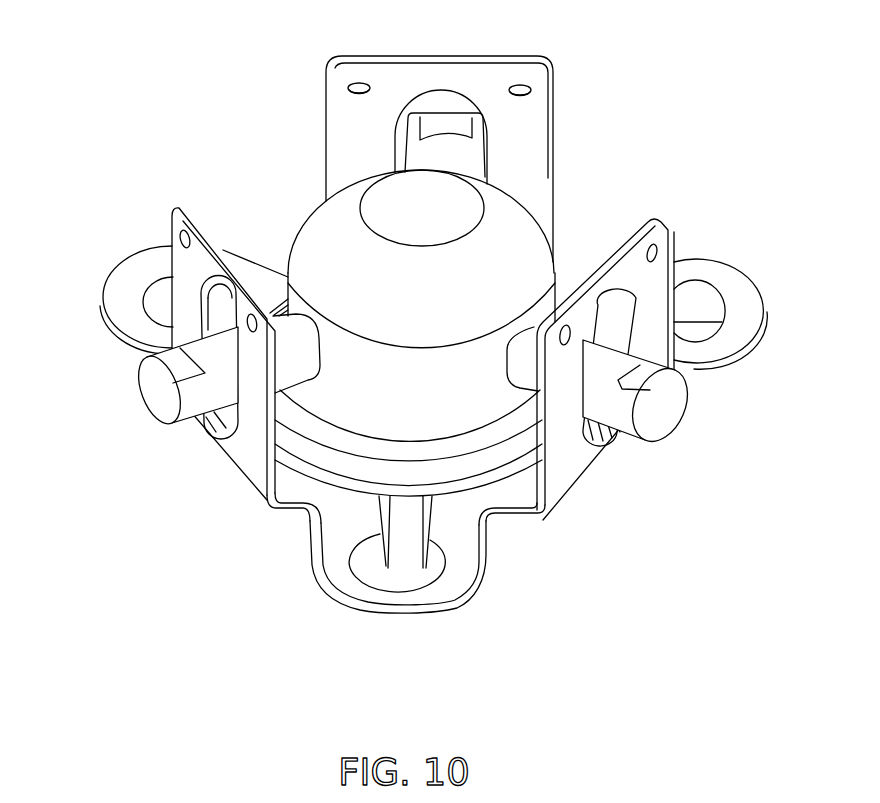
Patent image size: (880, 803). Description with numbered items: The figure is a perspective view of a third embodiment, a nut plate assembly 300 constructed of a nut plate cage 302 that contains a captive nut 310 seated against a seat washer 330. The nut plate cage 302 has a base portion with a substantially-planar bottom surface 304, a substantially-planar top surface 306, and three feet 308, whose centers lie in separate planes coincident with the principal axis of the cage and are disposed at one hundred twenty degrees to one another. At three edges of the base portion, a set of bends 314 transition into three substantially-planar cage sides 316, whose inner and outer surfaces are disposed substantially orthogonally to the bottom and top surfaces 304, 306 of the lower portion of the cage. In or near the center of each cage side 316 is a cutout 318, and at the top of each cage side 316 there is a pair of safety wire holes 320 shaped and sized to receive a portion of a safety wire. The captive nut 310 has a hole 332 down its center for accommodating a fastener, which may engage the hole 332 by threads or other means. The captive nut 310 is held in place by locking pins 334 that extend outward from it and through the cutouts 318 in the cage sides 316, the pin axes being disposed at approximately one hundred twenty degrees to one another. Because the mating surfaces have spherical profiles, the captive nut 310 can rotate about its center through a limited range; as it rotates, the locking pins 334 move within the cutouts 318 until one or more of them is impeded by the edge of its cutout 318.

The nut plate assembly 300 is at (118, 63).
The nut plate cage 302 is at (165, 286).
The bottom surface 304 is at (385, 620).
The top surface 306 is at (123, 283).
The feet 308 is at (400, 580).
The captive nut 310 is at (313, 240).
The bends 314 is at (267, 510).
The cage sides 316 is at (543, 193).
The cutout 318 is at (490, 157).
The safety wire holes 320 is at (357, 80).
The seat washer 330 is at (330, 480).
The hole 332 is at (378, 213).
The locking pins 334 is at (455, 138).